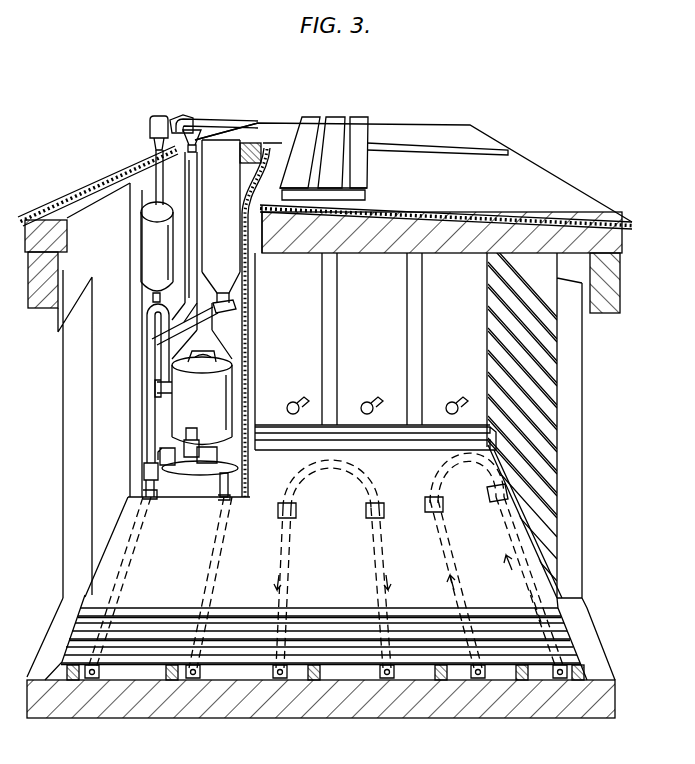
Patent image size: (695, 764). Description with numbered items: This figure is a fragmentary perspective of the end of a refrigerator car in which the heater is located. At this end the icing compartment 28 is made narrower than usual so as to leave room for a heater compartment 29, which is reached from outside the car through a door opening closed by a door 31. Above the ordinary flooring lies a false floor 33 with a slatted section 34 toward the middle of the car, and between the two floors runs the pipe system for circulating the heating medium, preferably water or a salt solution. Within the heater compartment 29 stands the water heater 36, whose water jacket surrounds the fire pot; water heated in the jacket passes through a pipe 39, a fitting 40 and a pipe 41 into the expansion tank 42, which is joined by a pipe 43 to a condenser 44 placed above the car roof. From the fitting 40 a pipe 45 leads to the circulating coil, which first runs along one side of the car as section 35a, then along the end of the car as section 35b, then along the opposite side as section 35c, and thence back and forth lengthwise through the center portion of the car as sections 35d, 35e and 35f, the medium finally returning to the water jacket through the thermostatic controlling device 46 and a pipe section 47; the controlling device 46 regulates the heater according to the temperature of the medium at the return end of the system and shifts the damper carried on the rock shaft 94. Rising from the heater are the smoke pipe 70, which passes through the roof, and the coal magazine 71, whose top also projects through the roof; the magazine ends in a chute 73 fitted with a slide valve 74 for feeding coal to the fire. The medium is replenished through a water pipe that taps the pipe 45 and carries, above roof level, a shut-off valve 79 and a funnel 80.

The icing compartment 28 is at (452, 273).
The heater compartment 29 is at (242, 220).
The door 31 is at (143, 403).
The false floor 33 is at (337, 587).
The slatted section 34 is at (352, 650).
The circulating coil section 35a is at (138, 543).
The circulating coil section 35b is at (205, 553).
The circulating coil section 35c is at (525, 568).
The circulating coil section 35d is at (292, 550).
The circulating coil section 35e is at (380, 557).
The circulating coil section 35f is at (453, 557).
The water heater 36 is at (228, 385).
The pipe 39 is at (163, 358).
The fitting 40 is at (146, 309).
The pipe 41 is at (152, 296).
The expansion tank 42 is at (155, 240).
The pipe 43 is at (155, 175).
The condenser 44 is at (162, 122).
The pipe 45 is at (148, 334).
The thermostatic controlling device 46 is at (238, 463).
The pipe section 47 is at (197, 437).
The smoke pipe 70 is at (186, 244).
The coal magazine 71 is at (227, 150).
The chute 73 is at (220, 299).
The slide valve 74 is at (234, 308).
The shut-off valve 79 is at (196, 154).
The funnel 80 is at (198, 143).
The rock shaft 94 is at (160, 454).